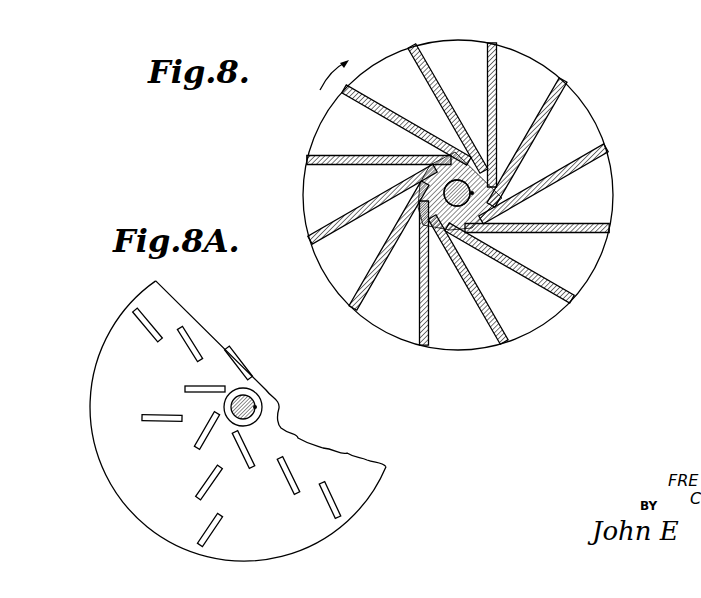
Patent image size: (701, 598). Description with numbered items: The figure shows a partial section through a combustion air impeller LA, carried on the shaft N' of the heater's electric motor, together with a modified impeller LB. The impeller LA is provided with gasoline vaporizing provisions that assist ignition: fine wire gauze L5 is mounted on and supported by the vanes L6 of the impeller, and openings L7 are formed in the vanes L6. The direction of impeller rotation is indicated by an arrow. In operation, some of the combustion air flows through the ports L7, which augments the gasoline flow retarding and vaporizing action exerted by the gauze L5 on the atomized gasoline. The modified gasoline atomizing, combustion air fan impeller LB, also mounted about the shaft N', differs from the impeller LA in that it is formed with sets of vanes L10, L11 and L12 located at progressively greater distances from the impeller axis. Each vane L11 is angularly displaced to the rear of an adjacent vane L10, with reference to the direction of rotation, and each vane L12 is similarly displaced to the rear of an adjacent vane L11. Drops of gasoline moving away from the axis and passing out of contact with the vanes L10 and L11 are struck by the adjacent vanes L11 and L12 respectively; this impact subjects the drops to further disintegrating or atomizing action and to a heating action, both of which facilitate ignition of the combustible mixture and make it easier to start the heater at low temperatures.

In FIG. 8, the combustion air impeller LA is at (613, 204).
In FIG. 8, the motor shaft N' is at (477, 242).
In FIG. 8A, the motor shaft N' is at (269, 391).
In FIG. 8, the wire gauze L5 is at (497, 70).
In FIG. 8, the vanes L6 is at (480, 63).
In FIG. 8, the openings L7 is at (565, 166).
In FIG. 8A, the combustion air fan impeller LB is at (128, 307).
In FIG. 8A, the vanes L10 is at (208, 387).
In FIG. 8A, the vanes L11 is at (193, 343).
In FIG. 8A, the vanes L12 is at (152, 322).